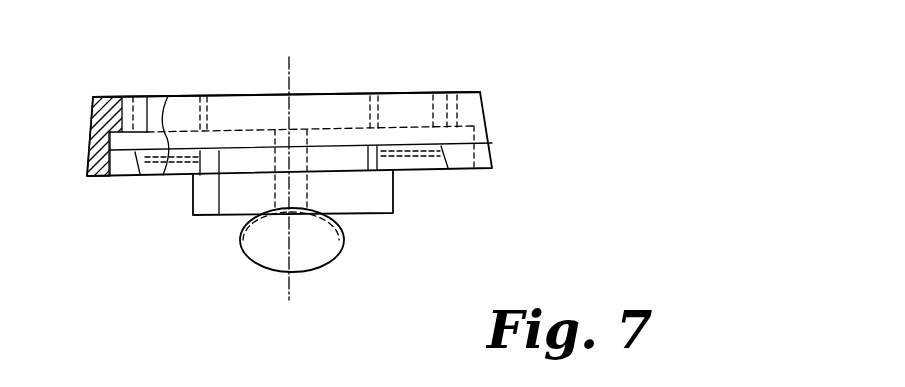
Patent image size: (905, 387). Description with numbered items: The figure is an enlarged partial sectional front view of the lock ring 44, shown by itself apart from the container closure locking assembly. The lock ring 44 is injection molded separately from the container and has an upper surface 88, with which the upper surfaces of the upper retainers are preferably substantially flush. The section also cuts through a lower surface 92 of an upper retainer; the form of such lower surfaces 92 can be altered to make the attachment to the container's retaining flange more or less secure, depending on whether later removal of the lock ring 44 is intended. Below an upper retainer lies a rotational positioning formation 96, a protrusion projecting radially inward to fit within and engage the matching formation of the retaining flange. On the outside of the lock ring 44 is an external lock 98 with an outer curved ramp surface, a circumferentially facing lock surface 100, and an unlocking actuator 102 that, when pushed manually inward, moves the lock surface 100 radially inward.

The lock ring 44 is at (530, 132).
The upper surface 88 is at (474, 86).
The lower surface 92 is at (121, 150).
The rotational positioning formation 96 is at (302, 160).
The external lock 98 is at (378, 199).
The lock surface 100 is at (277, 196).
The unlocking actuator 102 is at (268, 242).